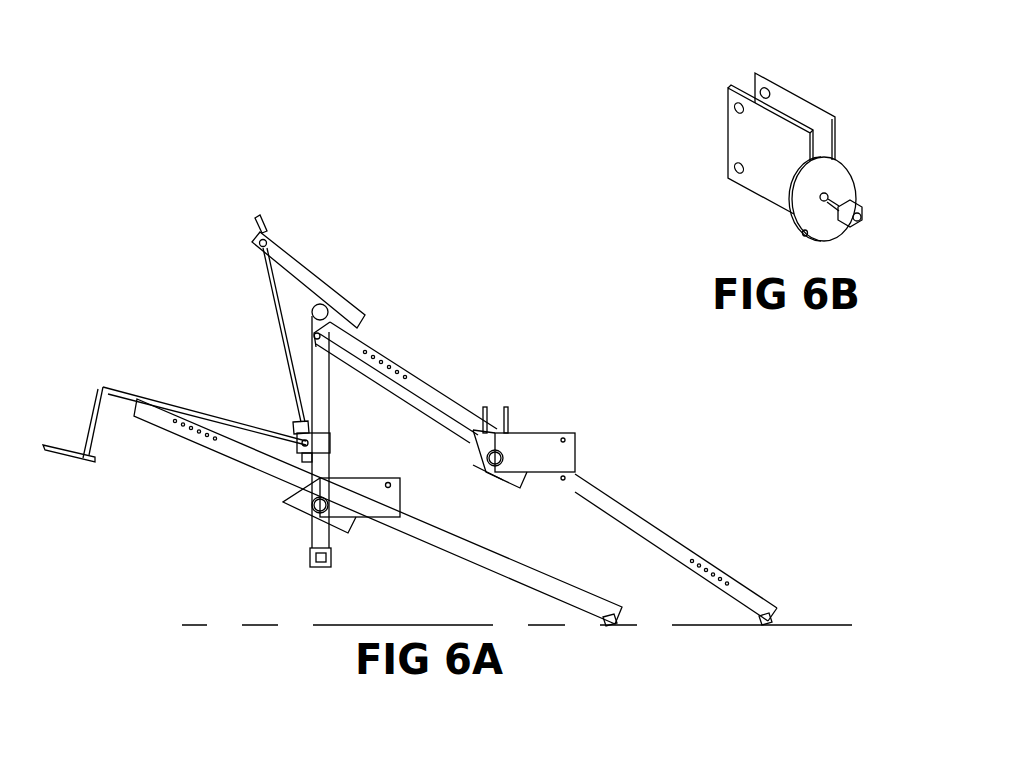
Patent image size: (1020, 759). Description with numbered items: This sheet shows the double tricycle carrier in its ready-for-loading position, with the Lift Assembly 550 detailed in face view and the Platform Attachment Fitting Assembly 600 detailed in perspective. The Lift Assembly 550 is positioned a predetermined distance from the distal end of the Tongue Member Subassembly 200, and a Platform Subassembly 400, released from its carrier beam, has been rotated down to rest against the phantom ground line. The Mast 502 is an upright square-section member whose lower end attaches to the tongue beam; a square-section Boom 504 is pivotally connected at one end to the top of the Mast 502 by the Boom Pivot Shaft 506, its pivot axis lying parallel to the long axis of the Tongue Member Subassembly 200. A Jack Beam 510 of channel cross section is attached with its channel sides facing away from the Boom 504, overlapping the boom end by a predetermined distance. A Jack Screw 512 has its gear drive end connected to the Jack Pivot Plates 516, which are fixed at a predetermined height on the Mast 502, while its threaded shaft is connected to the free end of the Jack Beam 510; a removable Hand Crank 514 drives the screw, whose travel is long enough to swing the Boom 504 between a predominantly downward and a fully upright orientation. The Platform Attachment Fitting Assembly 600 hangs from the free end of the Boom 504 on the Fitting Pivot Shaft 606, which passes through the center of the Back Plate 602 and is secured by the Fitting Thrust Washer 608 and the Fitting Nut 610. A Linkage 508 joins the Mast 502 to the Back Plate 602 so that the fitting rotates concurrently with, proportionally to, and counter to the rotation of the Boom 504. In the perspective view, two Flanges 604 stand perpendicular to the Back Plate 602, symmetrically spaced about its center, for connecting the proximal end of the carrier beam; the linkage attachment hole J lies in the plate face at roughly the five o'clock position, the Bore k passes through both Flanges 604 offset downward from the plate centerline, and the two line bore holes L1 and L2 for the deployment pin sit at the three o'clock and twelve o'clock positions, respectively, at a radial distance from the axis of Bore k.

In FIG. 6A, the Lift Assembly 550 is at (225, 214).
In FIG. 6A, the Jack Beam 510 is at (295, 263).
In FIG. 6A, the Boom Pivot Shaft 506 is at (313, 310).
In FIG. 6A, the Jack Screw 512 is at (282, 338).
In FIG. 6A, the Boom 504 is at (363, 333).
In FIG. 6A, the Hand Crank 514 is at (220, 415).
In FIG. 6A, the Jack Pivot Plates 516 is at (320, 443).
In FIG. 6A, the Mast 502 is at (320, 463).
In FIG. 6A, the Platform Attachment Fitting Assembly 600 is at (564, 419).
In FIG. 6B, the Platform Attachment Fitting Assembly 600 is at (730, 63).
In FIG. 6A, the Linkage 508 is at (491, 483).
In FIG. 6A, the Platform Subassembly 400 is at (444, 565).
In FIG. 6A, the Tongue Member Subassembly 200 is at (290, 558).
In FIG. 6B, the Flanges 604 is at (763, 120).
In FIG. 6B, the Back Plate 602 is at (843, 168).
In FIG. 6B, the Fitting Pivot Shaft 606 is at (828, 196).
In FIG. 6B, the Fitting Thrust Washer 608 is at (853, 202).
In FIG. 6B, the Fitting Nut 610 is at (850, 225).
In FIG. 6B, the line bore hole L2 is at (734, 105).
In FIG. 6B, the Bore k is at (734, 166).
In FIG. 6B, the line bore hole L1 is at (793, 197).
In FIG. 6B, the linkage attachment hole J is at (801, 235).